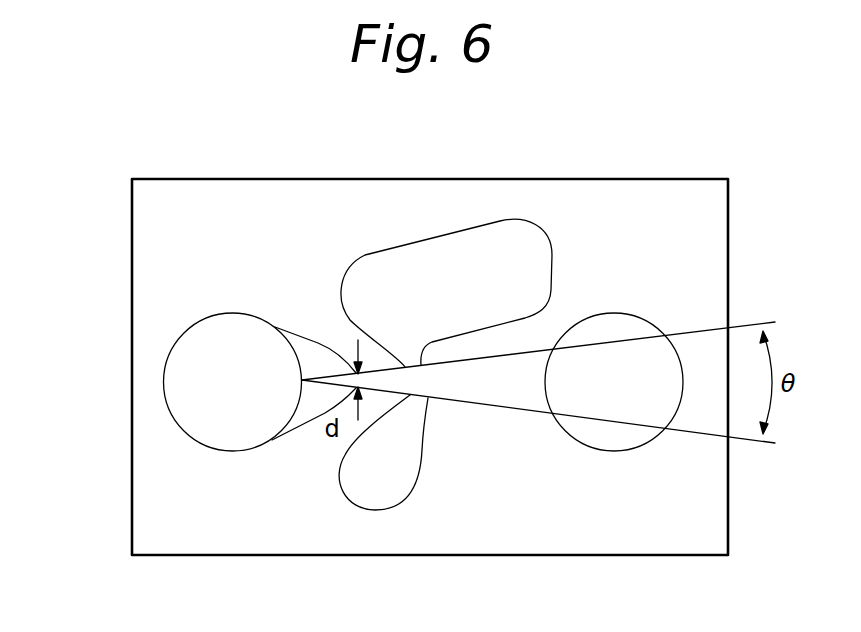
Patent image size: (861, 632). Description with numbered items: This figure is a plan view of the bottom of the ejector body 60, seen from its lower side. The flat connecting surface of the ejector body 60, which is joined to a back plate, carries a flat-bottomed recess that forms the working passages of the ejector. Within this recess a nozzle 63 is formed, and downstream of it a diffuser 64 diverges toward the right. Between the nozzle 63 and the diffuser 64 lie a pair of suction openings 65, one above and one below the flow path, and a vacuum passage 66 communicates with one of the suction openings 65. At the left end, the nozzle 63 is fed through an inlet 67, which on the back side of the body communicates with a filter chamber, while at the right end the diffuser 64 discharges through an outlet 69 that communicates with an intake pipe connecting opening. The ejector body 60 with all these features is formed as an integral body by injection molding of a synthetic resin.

The ejector body 60 is at (188, 227).
The nozzle 63 is at (350, 373).
The diffuser 64 is at (515, 370).
The suction openings 65 is at (410, 362).
The vacuum passage 66 is at (458, 247).
The inlet of the nozzle 67 is at (210, 350).
The outlet of the diffuser 69 is at (598, 405).